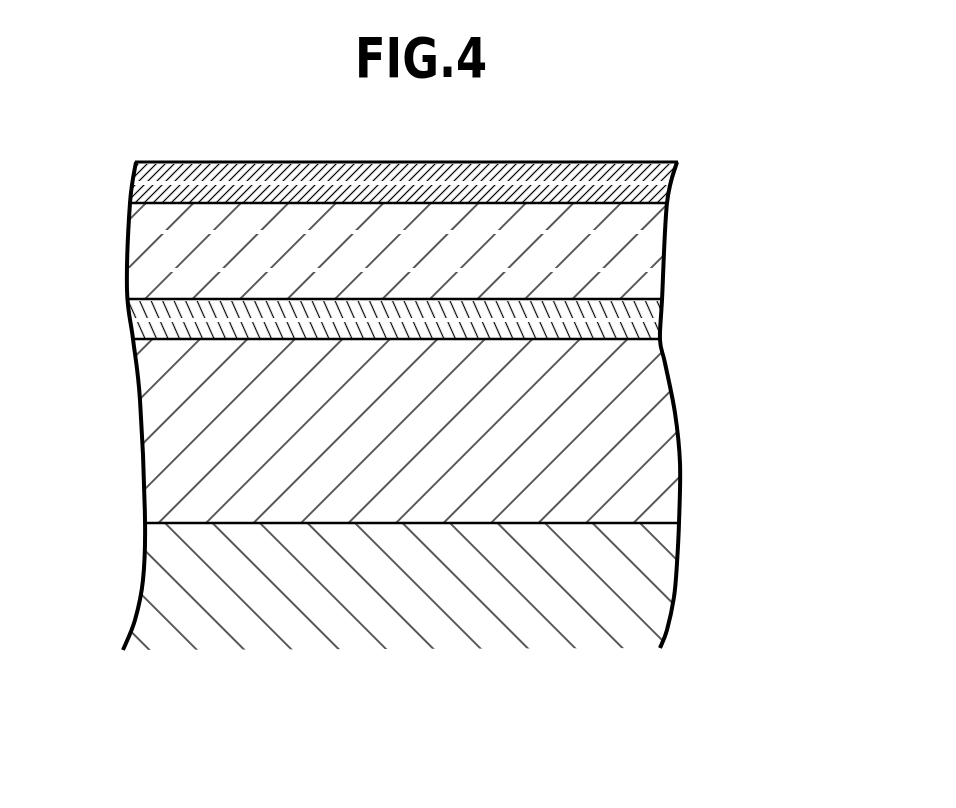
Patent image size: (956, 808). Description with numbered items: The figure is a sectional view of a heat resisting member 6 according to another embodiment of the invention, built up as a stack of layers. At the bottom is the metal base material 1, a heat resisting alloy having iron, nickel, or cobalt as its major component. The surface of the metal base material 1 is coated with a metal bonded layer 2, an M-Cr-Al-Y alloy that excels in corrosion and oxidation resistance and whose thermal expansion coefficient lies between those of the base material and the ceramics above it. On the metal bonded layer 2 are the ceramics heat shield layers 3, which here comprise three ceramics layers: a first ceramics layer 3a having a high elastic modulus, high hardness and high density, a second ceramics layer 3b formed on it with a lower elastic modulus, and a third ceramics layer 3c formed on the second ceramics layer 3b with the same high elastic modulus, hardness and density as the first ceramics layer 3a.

The metal base material 1 is at (653, 603).
The metal bonded layer 2 is at (653, 453).
The ceramics heat shield layers 3 is at (758, 178).
The first ceramics layer 3a is at (637, 317).
The second ceramics layer 3b is at (637, 253).
The third ceramics layer 3c is at (637, 192).
The heat resisting member 6 is at (694, 132).